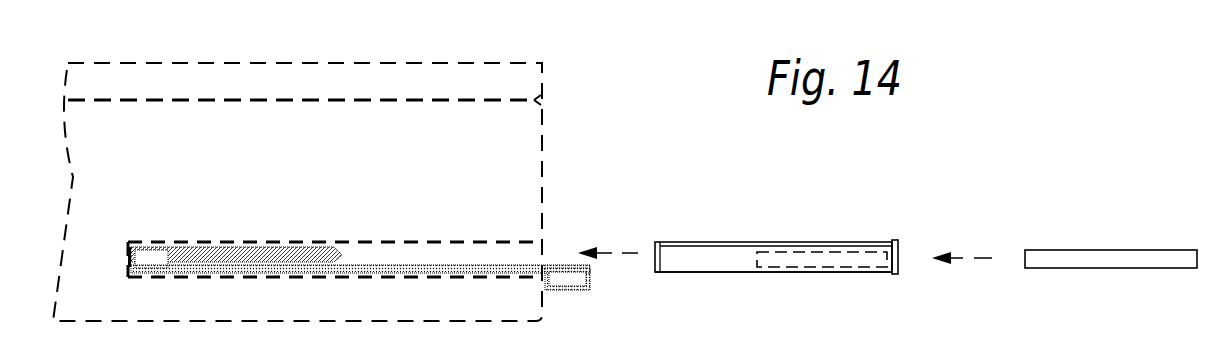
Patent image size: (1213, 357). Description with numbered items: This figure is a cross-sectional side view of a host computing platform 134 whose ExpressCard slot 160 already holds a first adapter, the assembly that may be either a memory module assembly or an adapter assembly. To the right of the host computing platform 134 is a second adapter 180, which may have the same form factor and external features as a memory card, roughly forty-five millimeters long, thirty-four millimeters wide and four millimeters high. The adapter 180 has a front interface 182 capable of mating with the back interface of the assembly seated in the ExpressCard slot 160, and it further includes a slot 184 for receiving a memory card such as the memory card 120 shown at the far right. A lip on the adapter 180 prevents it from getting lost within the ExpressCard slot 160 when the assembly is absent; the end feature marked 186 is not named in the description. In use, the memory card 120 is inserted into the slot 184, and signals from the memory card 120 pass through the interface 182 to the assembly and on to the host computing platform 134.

The host computing platform 134 is at (239, 77).
The ExpressCard slot 160 is at (412, 253).
The adapter 180 is at (783, 242).
The front interface 182 is at (672, 275).
The slot 184 is at (847, 260).
The cartridge end cap 186 is at (897, 238).
The memory card 120 is at (1108, 250).